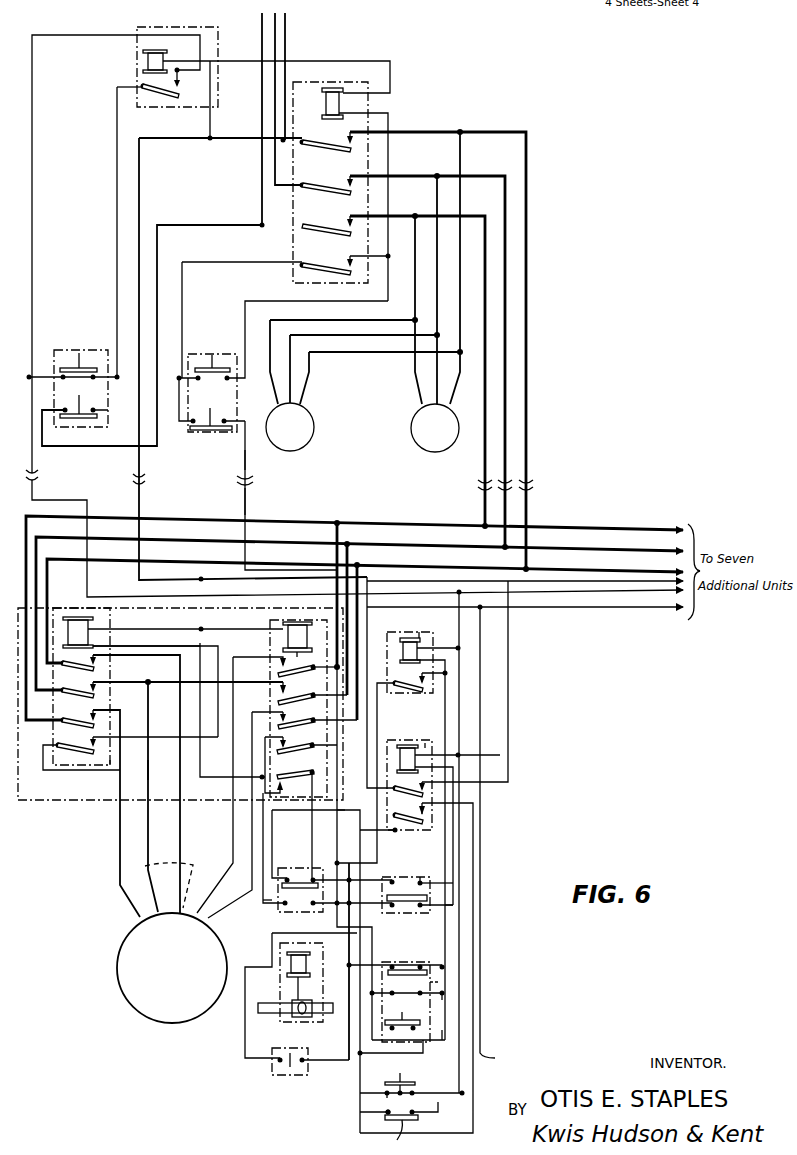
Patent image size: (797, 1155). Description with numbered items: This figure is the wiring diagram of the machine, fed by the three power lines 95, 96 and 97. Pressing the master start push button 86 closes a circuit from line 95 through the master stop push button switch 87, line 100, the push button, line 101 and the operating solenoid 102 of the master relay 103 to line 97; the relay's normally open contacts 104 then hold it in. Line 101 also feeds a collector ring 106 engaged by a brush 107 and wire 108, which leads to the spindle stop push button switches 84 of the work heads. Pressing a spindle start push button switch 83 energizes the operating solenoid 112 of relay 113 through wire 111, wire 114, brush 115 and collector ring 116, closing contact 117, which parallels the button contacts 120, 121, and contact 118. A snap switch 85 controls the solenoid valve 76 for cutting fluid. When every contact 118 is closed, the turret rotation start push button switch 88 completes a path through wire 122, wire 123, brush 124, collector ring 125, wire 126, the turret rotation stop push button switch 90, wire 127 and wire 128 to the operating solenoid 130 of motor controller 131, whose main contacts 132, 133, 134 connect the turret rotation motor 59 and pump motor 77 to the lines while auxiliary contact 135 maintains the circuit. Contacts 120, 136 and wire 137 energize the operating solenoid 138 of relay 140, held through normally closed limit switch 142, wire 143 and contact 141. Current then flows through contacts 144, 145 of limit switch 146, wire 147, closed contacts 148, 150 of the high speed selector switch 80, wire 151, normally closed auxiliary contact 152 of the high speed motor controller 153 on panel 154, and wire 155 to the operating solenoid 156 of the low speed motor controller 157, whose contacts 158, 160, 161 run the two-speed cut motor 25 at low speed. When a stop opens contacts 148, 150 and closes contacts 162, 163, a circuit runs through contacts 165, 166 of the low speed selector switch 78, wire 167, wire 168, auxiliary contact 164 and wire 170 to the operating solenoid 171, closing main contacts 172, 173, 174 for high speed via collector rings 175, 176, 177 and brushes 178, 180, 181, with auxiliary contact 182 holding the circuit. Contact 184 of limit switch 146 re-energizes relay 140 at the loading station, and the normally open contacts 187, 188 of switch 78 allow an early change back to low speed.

The cut motor 25 is at (142, 1008).
The turret rotation motor 59 is at (300, 440).
The solenoid valve 76 is at (292, 1020).
The pump motor 77 is at (413, 442).
The low speed selector switch 78 is at (428, 878).
The high speed selector switch 80 is at (300, 903).
The spindle start push button switch 83 is at (405, 1080).
The spindle stop push button switch 84 is at (403, 1131).
The snap switch 85 is at (275, 1075).
The master start push button 86 is at (82, 352).
The master stop push button switch 87 is at (80, 410).
The turret rotation start push button switch 88 is at (222, 352).
The turret rotation stop push button switch 90 is at (210, 418).
The power line 95 is at (262, 25).
The power line 96 is at (277, 30).
The power line 97 is at (286, 46).
The line 100 is at (117, 242).
The line 101 is at (32, 298).
The operating solenoid 102 is at (145, 60).
The master relay 103 is at (140, 80).
The normally open contacts 104 is at (162, 98).
The collector ring 106 is at (36, 470).
The brush 107 is at (34, 477).
The wire 108 is at (102, 512).
The wire 111 is at (358, 1072).
The operating solenoid 112 is at (410, 745).
The relay 113 is at (422, 746).
The wire 114 is at (636, 600).
The brush 115 is at (141, 481).
The collector ring 116 is at (143, 474).
The normally open contact 117 is at (415, 836).
The normally open contact 118 is at (420, 798).
The contact 120 is at (420, 1110).
The contact 121 is at (385, 1095).
The wire 122 is at (672, 600).
The wire 123 is at (370, 575).
The brush 124 is at (246, 497).
The collector ring 125 is at (245, 478).
The wire 126 is at (242, 462).
The wire 127 is at (190, 296).
The wire 128 is at (245, 302).
The operating solenoid 130 is at (330, 96).
The motor controller 131 is at (385, 75).
The main contact 132 is at (338, 154).
The main contact 133 is at (338, 196).
The main contact 134 is at (338, 237).
The auxiliary contact 135 is at (338, 278).
The contact 136 is at (385, 1093).
The wire 137 is at (445, 1032).
The operating solenoid 138 is at (390, 640).
The relay 140 is at (428, 636).
The normally open contact 141 is at (420, 693).
The limit switch 142 is at (420, 1010).
The wire 143 is at (372, 812).
The normally closed contact 144 is at (398, 966).
The normally closed contact 145 is at (422, 966).
The limit switch 146 is at (445, 982).
The wire 147 is at (349, 1045).
The normally closed contact 148 is at (316, 878).
The normally closed contact 150 is at (290, 878).
The wire 151 is at (272, 848).
The auxiliary contact 152 is at (290, 780).
The high speed motor controller 153 is at (268, 626).
The panel 154 is at (120, 606).
The wire 155 is at (212, 782).
The operating solenoid 156 is at (82, 634).
The low speed motor controller 157 is at (102, 768).
The main power contact 158 is at (90, 672).
The main power contact 160 is at (90, 699).
The main power contact 161 is at (90, 728).
The normally open contact 162 is at (316, 905).
The normally open contact 163 is at (272, 905).
The auxiliary contact 164 is at (75, 766).
The normally closed contact 165 is at (405, 903).
The normally closed contact 166 is at (430, 905).
The wire 167 is at (350, 862).
The wire 168 is at (165, 782).
The wire 170 is at (250, 650).
The operating solenoid 171 is at (298, 625).
The main contact 172 is at (296, 672).
The main contact 173 is at (298, 697).
The main contact 174 is at (296, 726).
The collector ring 175 is at (478, 475).
The collector ring 176 is at (510, 478).
The collector ring 177 is at (520, 482).
The brush 178 is at (478, 487).
The brush 180 is at (515, 495).
The brush 181 is at (530, 486).
The auxiliary contact 182 is at (296, 750).
The normally open contact 184 is at (445, 1002).
The normally open contact 187 is at (396, 880).
The normally open contact 188 is at (430, 885).